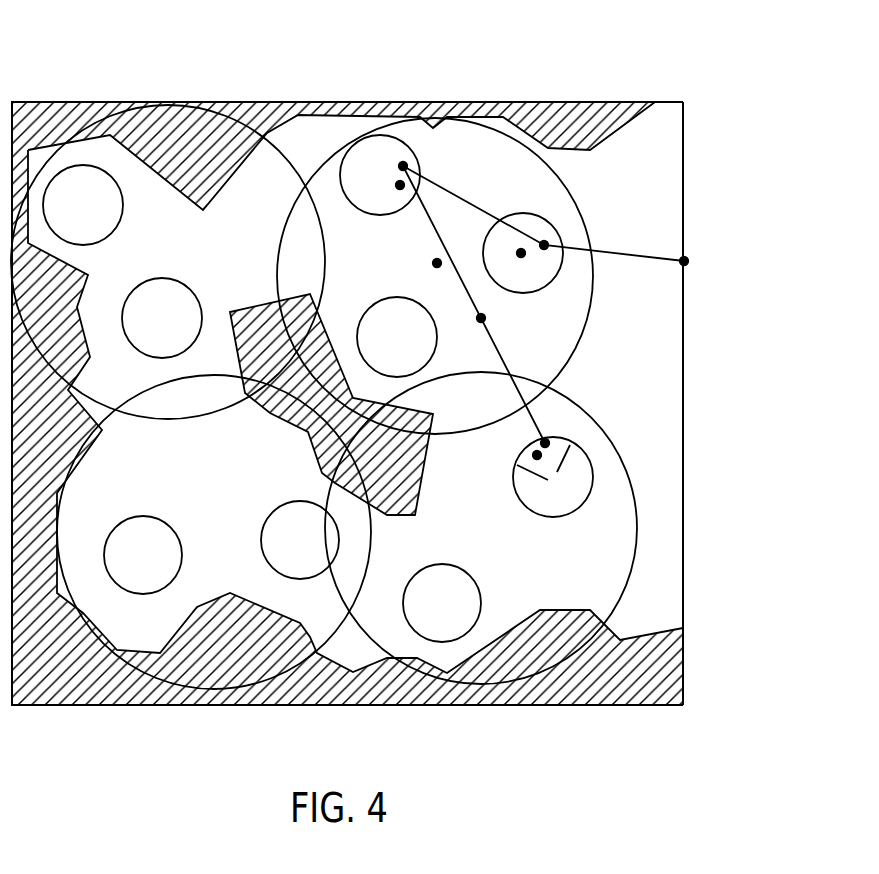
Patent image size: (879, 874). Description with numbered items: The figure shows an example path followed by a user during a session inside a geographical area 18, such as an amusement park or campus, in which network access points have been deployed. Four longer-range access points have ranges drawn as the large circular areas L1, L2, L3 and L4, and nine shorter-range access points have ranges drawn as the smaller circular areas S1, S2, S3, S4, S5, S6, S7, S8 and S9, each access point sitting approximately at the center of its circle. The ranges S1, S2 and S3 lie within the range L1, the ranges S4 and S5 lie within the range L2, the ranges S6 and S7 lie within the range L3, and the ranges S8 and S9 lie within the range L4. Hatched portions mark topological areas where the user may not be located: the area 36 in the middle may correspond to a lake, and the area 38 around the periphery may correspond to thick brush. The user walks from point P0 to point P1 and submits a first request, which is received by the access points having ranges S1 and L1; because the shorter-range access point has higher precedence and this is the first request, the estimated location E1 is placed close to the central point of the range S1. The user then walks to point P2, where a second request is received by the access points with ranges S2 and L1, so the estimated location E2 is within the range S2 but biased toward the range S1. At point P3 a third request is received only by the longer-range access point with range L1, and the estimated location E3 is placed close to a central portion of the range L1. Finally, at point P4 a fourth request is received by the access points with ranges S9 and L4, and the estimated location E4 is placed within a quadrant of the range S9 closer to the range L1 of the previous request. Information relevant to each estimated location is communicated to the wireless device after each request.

The area 38 is at (329, 101).
The geographical area 18 is at (669, 102).
The area 36 is at (321, 305).
The range L1 is at (503, 161).
The range L2 is at (188, 255).
The range L3 is at (233, 541).
The range L4 is at (502, 541).
The range S1 is at (513, 265).
The range S2 is at (372, 186).
The range S3 is at (408, 351).
The range S4 is at (173, 331).
The range S5 is at (95, 213).
The range S6 is at (157, 573).
The range S7 is at (313, 558).
The range S8 is at (453, 620).
The range S9 is at (570, 505).
The point P0 is at (687, 259).
The point P1 is at (548, 243).
The point P2 is at (406, 163).
The point P3 is at (484, 321).
The point P4 is at (547, 441).
The estimated location E1 is at (521, 258).
The estimated location E2 is at (399, 191).
The estimated location E3 is at (436, 268).
The estimated location E4 is at (534, 452).